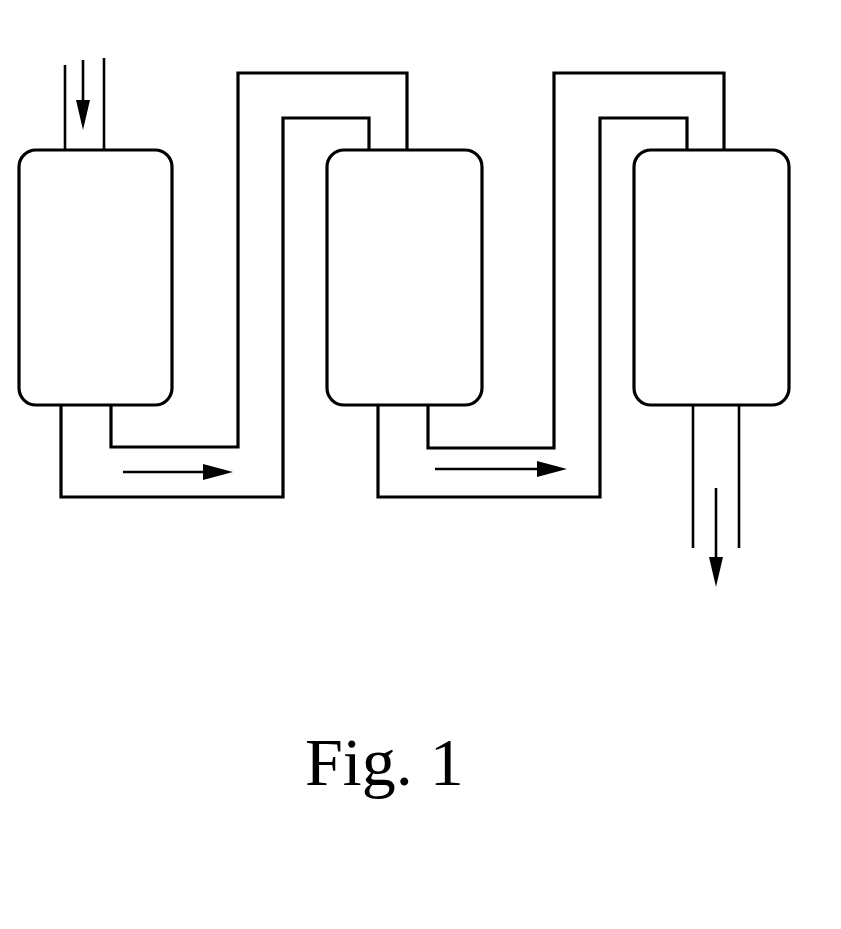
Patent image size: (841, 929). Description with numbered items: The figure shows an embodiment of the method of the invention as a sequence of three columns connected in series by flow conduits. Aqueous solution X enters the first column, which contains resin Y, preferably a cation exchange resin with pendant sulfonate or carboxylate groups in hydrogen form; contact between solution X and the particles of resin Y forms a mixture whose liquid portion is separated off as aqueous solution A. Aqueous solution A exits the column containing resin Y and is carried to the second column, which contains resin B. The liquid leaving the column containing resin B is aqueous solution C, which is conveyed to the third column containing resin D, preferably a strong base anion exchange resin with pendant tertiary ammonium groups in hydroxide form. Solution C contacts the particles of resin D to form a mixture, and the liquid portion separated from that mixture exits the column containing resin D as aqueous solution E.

The aqueous solution X is at (84, 79).
The resin Y is at (95, 277).
The aqueous solution A is at (234, 285).
The resin B is at (404, 277).
The aqueous solution C is at (551, 285).
The resin D is at (711, 277).
The aqueous solution E is at (716, 496).